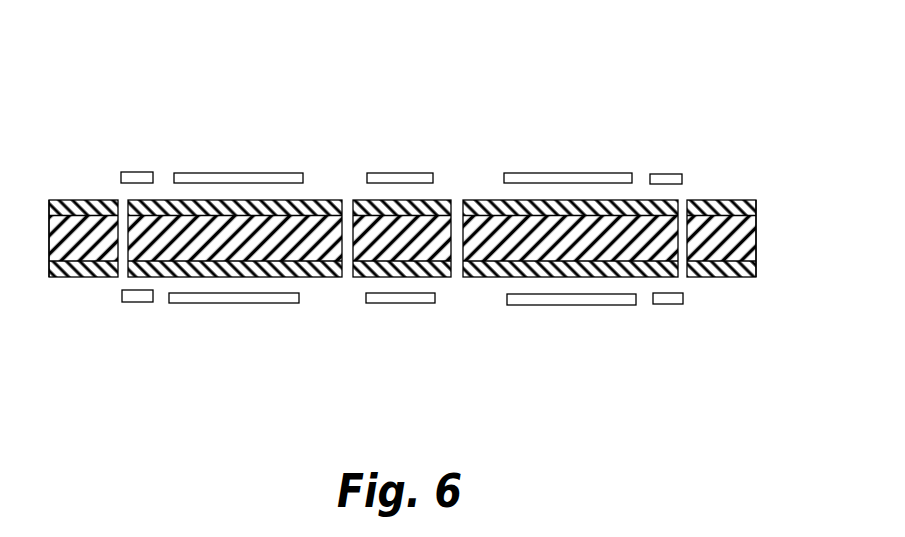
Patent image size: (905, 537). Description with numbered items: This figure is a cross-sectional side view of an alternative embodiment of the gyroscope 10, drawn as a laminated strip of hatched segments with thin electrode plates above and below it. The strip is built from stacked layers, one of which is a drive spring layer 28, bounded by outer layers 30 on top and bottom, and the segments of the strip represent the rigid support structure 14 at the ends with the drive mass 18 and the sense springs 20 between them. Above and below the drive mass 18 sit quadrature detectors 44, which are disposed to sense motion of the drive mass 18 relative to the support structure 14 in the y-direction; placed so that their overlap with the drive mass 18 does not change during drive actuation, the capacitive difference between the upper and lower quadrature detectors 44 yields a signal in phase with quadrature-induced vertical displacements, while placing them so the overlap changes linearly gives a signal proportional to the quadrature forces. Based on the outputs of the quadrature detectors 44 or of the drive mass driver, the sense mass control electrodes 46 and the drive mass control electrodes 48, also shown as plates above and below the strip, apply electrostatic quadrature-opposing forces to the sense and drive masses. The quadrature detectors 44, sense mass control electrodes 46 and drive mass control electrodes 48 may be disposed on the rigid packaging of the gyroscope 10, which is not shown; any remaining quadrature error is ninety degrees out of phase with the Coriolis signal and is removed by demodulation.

The gyroscope 10 is at (102, 67).
The rigid support structure 14 is at (71, 200).
The drive mass 18 is at (312, 199).
The sense springs 20 is at (448, 200).
The drive spring layer 28 is at (757, 233).
The outer layer 30 is at (757, 207).
The quadrature detectors 44 is at (132, 172).
The sense mass control electrodes 46 is at (398, 173).
The drive mass control electrodes 48 is at (243, 173).